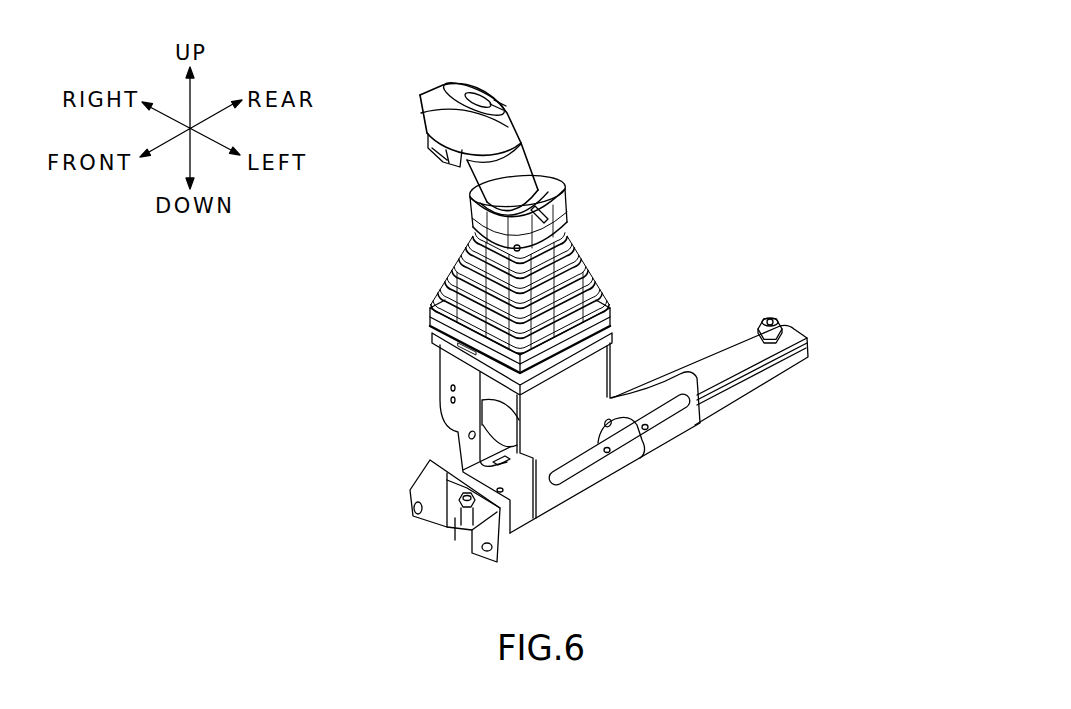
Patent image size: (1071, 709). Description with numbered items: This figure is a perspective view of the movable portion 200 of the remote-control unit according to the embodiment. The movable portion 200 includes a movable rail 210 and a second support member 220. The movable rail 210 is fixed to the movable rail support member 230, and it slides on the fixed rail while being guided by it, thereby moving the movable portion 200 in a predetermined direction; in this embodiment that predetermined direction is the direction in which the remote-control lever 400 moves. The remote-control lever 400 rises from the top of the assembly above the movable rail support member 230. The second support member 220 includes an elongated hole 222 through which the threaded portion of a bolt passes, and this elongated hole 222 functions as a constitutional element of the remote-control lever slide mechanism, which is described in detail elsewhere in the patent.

The movable portion 200 is at (744, 152).
The movable rail 210 is at (733, 352).
The second support member 220 is at (665, 391).
The elongated hole 222 is at (573, 467).
The movable rail support member 230 is at (440, 391).
The remote-control lever 400 is at (522, 142).